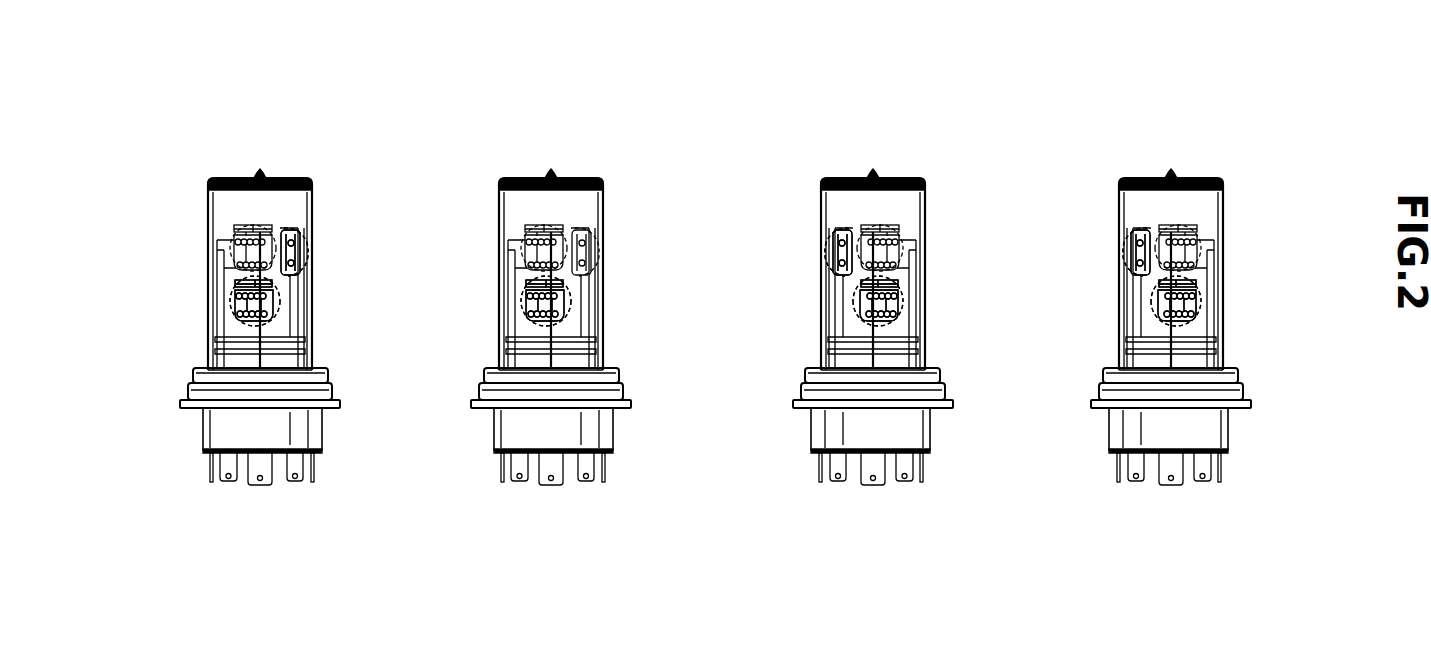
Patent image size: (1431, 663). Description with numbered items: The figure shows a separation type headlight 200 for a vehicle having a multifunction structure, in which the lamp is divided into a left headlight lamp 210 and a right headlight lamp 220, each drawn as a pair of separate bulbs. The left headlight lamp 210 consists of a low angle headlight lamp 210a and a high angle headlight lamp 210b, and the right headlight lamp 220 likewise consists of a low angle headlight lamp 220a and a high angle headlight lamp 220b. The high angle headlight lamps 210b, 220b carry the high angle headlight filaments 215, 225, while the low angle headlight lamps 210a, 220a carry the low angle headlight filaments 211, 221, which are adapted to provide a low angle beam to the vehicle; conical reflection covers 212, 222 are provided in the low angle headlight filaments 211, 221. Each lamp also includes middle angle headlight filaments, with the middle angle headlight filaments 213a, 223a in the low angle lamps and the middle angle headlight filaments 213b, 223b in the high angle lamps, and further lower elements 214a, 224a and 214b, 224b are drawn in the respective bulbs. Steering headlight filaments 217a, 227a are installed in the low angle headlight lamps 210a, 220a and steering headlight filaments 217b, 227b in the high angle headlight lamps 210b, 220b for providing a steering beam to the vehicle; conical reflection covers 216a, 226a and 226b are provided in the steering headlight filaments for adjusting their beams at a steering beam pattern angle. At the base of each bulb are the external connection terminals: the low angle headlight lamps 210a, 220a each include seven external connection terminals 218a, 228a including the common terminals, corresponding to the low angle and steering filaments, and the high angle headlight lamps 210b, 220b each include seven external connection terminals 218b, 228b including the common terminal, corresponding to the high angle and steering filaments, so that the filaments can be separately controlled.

The separation type headlight 200 is at (741, 551).
The left headlight lamp 210 is at (343, 89).
The right headlight lamp 220 is at (958, 89).
The low angle headlight lamp 210a is at (230, 202).
The high angle headlight lamp 210b is at (521, 202).
The low angle headlight lamp 220a is at (1195, 202).
The high angle headlight lamp 220b is at (895, 202).
The low angle headlight filament 211 is at (232, 232).
The high angle headlight filament 215 is at (531, 232).
The low angle headlight filament 221 is at (1197, 232).
The high angle headlight filament 225 is at (893, 232).
The conical reflection cover 212 is at (230, 250).
The conical reflection cover 222 is at (1199, 250).
The middle angle headlight filament 213a is at (232, 283).
The middle angle headlight filament 213b is at (523, 283).
The middle angle headlight filament 223a is at (1199, 283).
The middle angle headlight filament 223b is at (903, 283).
The filament support 214a is at (230, 310).
The filament support 214b is at (521, 310).
The filament support 224a is at (1201, 310).
The filament support 224b is at (903, 310).
The conical reflection cover 216a is at (290, 236).
The conical reflection cover 226a is at (1141, 236).
The conical reflection cover 226b is at (843, 236).
The steering headlight filament 217a is at (298, 240).
The steering headlight filament 217b is at (581, 236).
The steering headlight filament 227a is at (1134, 240).
The steering headlight filament 227b is at (840, 240).
The external connection terminals 218a is at (314, 480).
The external connection terminals 218b is at (605, 480).
The external connection terminals 228a is at (1121, 480).
The external connection terminals 228b is at (826, 480).